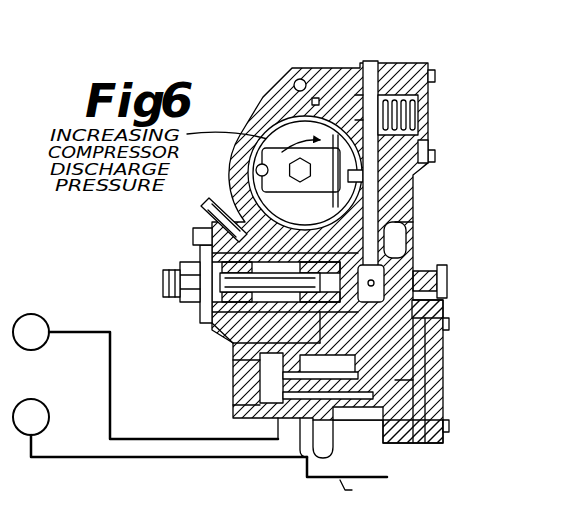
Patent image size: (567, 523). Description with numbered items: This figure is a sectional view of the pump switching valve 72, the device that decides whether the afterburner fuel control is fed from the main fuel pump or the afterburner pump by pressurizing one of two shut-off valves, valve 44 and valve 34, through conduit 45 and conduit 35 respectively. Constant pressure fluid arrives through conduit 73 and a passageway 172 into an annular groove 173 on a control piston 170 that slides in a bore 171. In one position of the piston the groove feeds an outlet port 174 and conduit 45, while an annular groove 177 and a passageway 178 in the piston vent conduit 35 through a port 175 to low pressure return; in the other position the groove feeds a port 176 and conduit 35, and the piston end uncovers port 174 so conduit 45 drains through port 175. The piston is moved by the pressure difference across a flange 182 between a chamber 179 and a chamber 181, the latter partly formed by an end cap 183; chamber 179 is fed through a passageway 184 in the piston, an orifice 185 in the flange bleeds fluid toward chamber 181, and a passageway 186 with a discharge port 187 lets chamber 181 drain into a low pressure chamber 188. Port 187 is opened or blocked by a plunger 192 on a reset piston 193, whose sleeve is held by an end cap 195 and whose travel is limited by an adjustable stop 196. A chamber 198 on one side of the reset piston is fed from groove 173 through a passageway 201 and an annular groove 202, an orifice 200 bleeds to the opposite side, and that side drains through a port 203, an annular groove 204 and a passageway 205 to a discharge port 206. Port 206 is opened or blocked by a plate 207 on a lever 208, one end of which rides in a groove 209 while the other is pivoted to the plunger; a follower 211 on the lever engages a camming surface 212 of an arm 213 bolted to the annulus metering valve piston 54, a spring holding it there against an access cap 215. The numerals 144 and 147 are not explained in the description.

The shut-off valve 34 is at (48, 413).
The conduit 35 is at (70, 461).
The shut-off valve 44 is at (49, 329).
The conduit 45 is at (141, 440).
The annulus metering valve piston 54 is at (283, 125).
The pump switching valve 72 is at (468, 202).
The conduit 73 is at (356, 491).
The valve shaft 144 is at (215, 326).
The housing wall 147 is at (232, 340).
The control piston 170 is at (347, 469).
The bore 171 is at (283, 395).
The passageway 172 is at (343, 443).
The annular groove 173 is at (290, 425).
The outlet port 174 is at (240, 410).
The port 175 is at (262, 380).
The port 176 is at (338, 430).
The annular groove 177 is at (400, 358).
The passageway 178 is at (245, 360).
The chamber 179 is at (380, 447).
The chamber 181 is at (405, 448).
The flange 182 is at (449, 335).
The end cap 183 is at (440, 366).
The passageway 184 is at (418, 351).
The orifice 185 is at (415, 386).
The passageway 186 is at (443, 308).
The discharge port 187 is at (447, 272).
The chamber 188 is at (406, 243).
The plunger 192 is at (410, 260).
The reset piston 193 is at (326, 197).
The end cap 195 is at (200, 316).
The adjustable stop 196 is at (183, 297).
The chamber 198 is at (285, 273).
The orifice 200 is at (372, 290).
The passageway 201 is at (343, 328).
The annular groove 202 is at (276, 332).
The port 203 is at (205, 256).
The annular groove 204 is at (198, 236).
The passageway 205 is at (207, 204).
The discharge port 206 is at (358, 92).
The plate 207 is at (368, 68).
The lever 208 is at (400, 232).
The groove 209 is at (396, 66).
The follower 211 is at (363, 178).
The camming surface 212 is at (330, 197).
The arm 213 is at (301, 163).
The access cap 215 is at (420, 120).